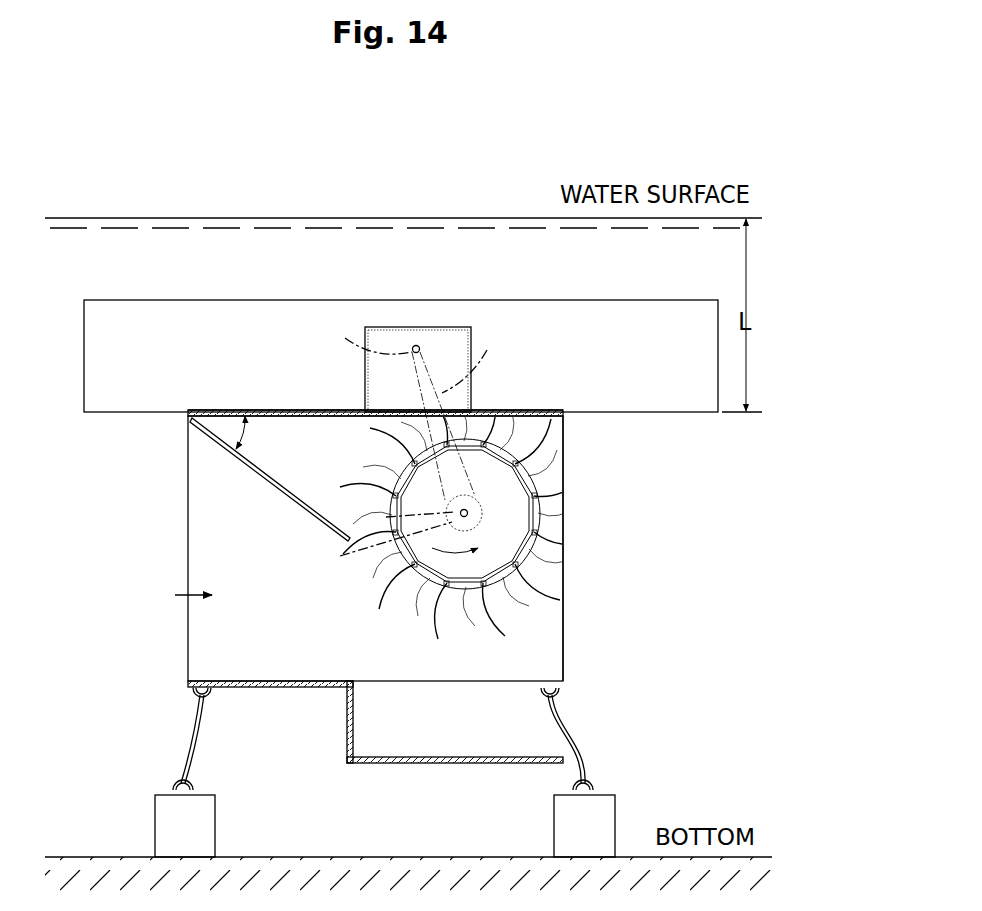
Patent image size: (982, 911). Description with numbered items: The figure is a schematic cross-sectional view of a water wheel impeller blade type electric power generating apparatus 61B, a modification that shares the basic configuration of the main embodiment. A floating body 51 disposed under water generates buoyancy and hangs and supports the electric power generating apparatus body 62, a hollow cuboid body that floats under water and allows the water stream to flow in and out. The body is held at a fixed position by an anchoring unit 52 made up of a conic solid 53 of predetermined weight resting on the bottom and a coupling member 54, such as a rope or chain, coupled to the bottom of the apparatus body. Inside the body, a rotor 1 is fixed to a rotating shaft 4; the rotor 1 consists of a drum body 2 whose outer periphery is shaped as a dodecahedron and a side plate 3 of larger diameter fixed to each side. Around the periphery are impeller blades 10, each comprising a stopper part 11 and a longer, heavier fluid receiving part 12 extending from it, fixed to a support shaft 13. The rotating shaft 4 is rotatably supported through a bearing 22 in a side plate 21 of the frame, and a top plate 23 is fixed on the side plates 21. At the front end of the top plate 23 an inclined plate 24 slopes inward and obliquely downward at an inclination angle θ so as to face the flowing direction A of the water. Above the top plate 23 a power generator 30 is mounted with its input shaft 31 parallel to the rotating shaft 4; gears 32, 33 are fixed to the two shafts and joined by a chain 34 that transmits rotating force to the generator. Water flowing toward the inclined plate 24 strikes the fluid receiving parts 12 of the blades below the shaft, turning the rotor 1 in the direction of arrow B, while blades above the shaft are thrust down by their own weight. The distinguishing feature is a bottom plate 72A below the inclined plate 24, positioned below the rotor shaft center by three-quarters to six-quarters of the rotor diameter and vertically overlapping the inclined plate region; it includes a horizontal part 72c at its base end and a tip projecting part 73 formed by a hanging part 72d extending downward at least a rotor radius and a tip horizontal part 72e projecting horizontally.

The rotor 1 is at (512, 440).
The drum body 2 is at (483, 582).
The side plate 3 is at (522, 455).
The rotating shaft 4 is at (470, 513).
The impeller blades 10 is at (465, 514).
The stopper part 11 is at (398, 470).
The fluid receiving part 12 is at (420, 455).
The support shaft 13 is at (538, 513).
The side plate 21 is at (316, 410).
The bearing 22 is at (399, 516).
The top plate 23 is at (242, 410).
The inclined plate 24 is at (300, 498).
The power generator 30 is at (460, 328).
The input shaft 31 is at (415, 346).
The gear 32 is at (382, 546).
The gear 33 is at (360, 338).
The chain 34 is at (480, 365).
The floating body 51 is at (695, 414).
The anchoring unit 52 is at (590, 760).
The conic solid 53 is at (216, 808).
The coupling member 54 is at (196, 738).
The water wheel impeller blade type electric power generating apparatus 61B is at (135, 500).
The electric power generating apparatus body 62 is at (572, 592).
The bottom plate 72A is at (384, 746).
The horizontal part 72c is at (308, 688).
The hanging part 72d is at (346, 748).
The tip horizontal part 72e is at (502, 756).
The tip projecting part 73 is at (398, 768).
The flowing direction of the water A is at (206, 595).
The rotation direction B is at (466, 550).